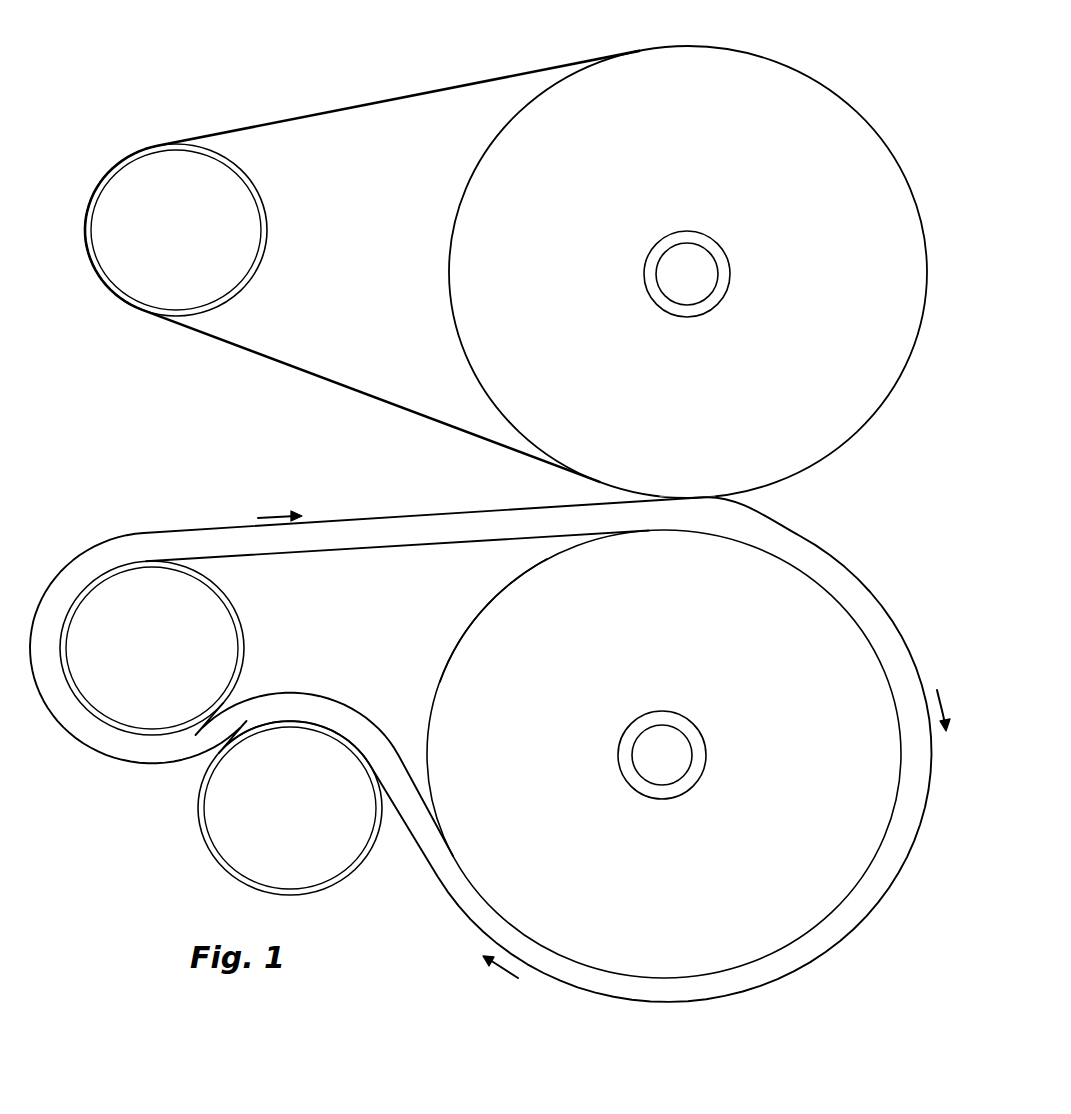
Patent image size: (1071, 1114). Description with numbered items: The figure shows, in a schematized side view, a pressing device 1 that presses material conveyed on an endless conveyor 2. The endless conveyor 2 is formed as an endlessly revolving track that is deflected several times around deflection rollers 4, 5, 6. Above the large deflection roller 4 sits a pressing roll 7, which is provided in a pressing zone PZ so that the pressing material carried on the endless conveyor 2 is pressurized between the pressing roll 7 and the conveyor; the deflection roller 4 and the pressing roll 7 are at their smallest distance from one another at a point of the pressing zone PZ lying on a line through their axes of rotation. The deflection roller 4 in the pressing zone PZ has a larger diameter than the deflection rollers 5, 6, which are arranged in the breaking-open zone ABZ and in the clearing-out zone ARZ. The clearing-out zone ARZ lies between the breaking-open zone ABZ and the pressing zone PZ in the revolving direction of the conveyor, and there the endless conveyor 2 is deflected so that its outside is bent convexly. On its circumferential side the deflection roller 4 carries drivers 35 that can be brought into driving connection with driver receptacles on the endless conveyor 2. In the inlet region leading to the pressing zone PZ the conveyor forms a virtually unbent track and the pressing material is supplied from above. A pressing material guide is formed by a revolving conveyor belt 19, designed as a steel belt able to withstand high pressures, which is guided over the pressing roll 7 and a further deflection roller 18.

The pressing device 1 is at (490, 509).
The endless conveyor 2 is at (403, 528).
The deflection roller 4 is at (810, 803).
The deflection roller 5 is at (317, 828).
The deflection roller 6 is at (165, 665).
The pressing roll 7 is at (790, 413).
The deflection roller 18 is at (194, 253).
The conveyor belt 19 is at (387, 102).
The drivers 35 is at (547, 560).
The pressing zone PZ is at (681, 496).
The clearing-out zone ARZ is at (115, 725).
The breaking-open zone ABZ is at (313, 726).